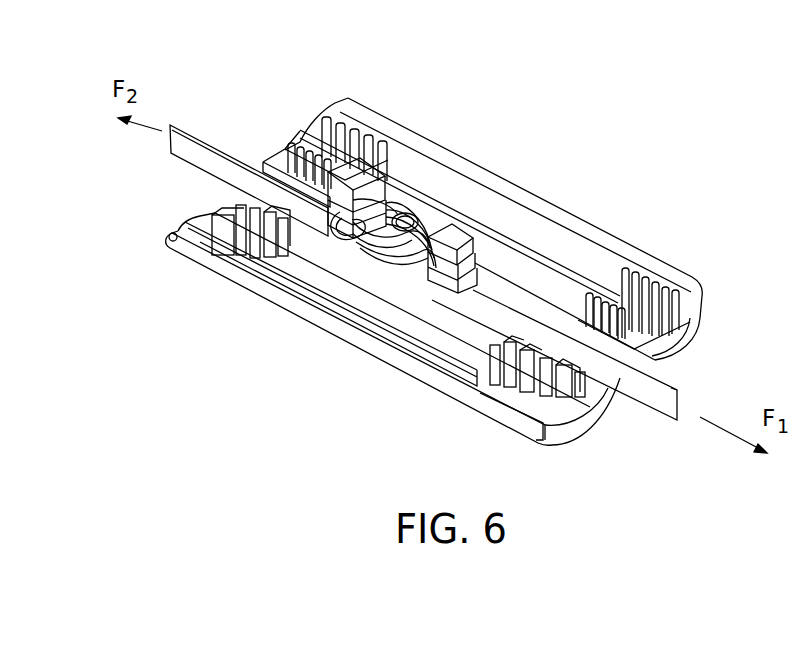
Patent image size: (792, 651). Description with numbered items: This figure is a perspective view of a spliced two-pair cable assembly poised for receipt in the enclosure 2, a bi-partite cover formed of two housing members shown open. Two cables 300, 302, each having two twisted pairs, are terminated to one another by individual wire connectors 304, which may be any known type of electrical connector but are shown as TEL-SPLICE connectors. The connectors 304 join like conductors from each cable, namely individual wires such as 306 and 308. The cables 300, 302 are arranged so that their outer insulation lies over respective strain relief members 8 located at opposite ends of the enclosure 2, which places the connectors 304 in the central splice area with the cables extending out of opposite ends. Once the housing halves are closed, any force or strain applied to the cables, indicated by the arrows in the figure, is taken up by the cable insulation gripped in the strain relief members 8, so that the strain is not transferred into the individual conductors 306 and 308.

The enclosure 2 is at (626, 214).
The strain relief member 8 is at (227, 238).
The cable 300 is at (656, 398).
The cable 302 is at (203, 157).
The individual wire connector 304 is at (360, 174).
The individual wire 306 is at (395, 268).
The individual wire 308 is at (442, 265).